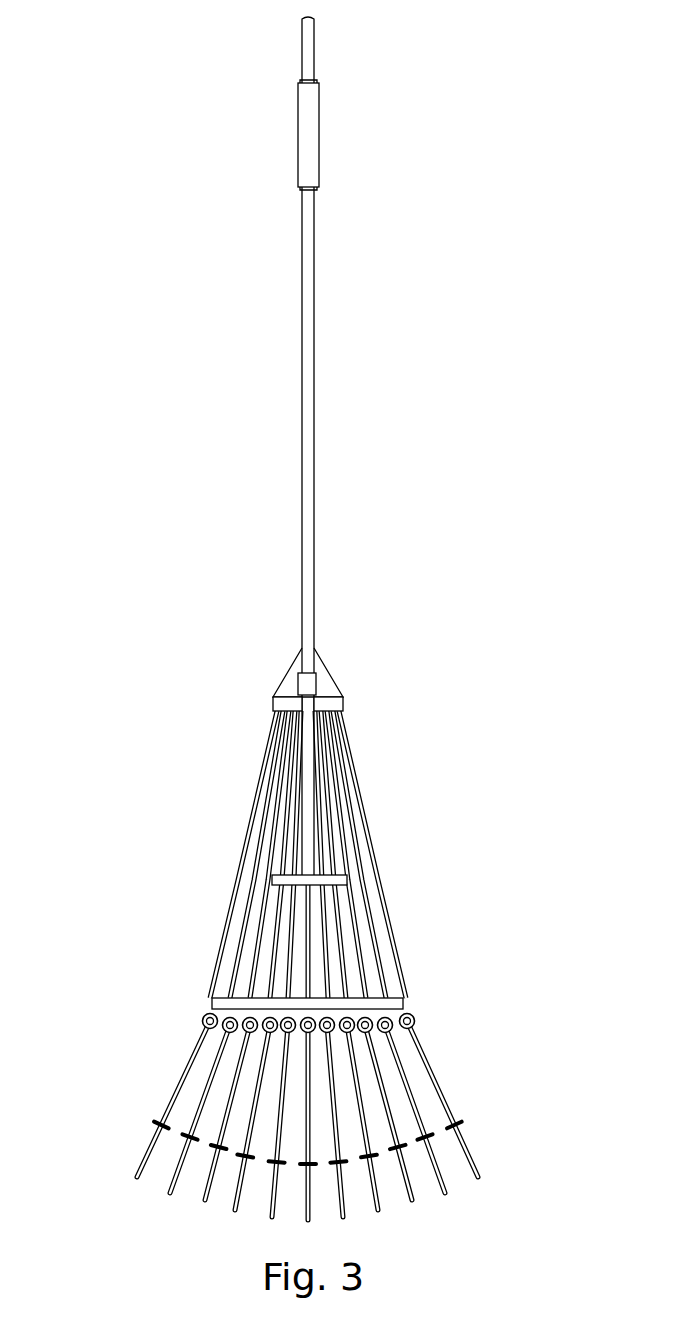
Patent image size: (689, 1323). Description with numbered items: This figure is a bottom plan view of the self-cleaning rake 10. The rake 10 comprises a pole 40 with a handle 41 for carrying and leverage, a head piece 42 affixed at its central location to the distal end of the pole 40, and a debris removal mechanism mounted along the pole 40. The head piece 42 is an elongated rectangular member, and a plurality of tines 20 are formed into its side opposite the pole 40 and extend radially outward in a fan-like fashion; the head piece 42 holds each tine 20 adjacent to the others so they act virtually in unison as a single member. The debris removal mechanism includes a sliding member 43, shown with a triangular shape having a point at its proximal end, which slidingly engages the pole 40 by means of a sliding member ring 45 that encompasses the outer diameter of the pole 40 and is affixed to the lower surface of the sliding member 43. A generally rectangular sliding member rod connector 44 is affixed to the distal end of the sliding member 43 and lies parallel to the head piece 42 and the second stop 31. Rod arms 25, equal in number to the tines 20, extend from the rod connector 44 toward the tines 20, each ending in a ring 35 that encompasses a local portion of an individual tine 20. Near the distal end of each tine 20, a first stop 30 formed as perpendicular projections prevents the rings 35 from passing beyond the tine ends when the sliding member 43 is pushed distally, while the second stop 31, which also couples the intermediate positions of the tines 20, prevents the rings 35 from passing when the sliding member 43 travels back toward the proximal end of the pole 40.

The self-cleaning rake 10 is at (163, 211).
The tines 20 is at (203, 1202).
The rod arms 25 is at (258, 775).
The first stop 30 is at (153, 1123).
The second stop 31 is at (393, 1003).
The ring 35 is at (203, 1016).
The pole 40 is at (310, 312).
The handle 41 is at (305, 130).
The head piece 42 is at (277, 880).
The sliding member 43 is at (288, 680).
The sliding member rod connector 44 is at (334, 706).
The sliding member ring 45 is at (303, 692).